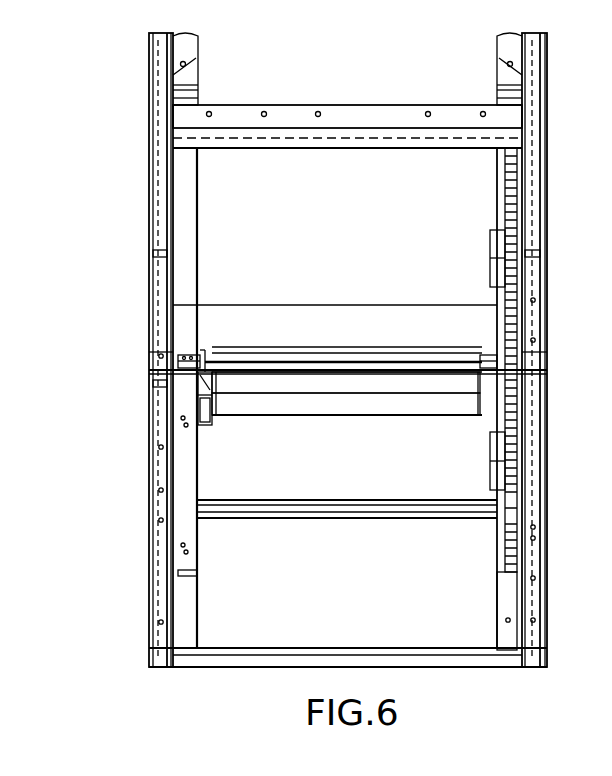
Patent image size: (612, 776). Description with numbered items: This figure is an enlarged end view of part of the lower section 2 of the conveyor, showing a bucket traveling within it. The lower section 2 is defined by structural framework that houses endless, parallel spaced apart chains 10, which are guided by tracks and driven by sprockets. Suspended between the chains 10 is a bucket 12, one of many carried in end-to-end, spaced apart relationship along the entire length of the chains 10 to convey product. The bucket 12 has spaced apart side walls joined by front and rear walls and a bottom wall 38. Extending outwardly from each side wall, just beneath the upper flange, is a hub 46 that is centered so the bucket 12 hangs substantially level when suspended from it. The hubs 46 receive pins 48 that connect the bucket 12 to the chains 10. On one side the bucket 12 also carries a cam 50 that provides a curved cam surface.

The lower section 2 is at (142, 442).
The chains 10 is at (505, 200).
The bucket 12 is at (290, 416).
The bottom wall 38 is at (408, 416).
The hub 46 is at (205, 358).
The pins 48 is at (149, 352).
The cam 50 is at (205, 426).